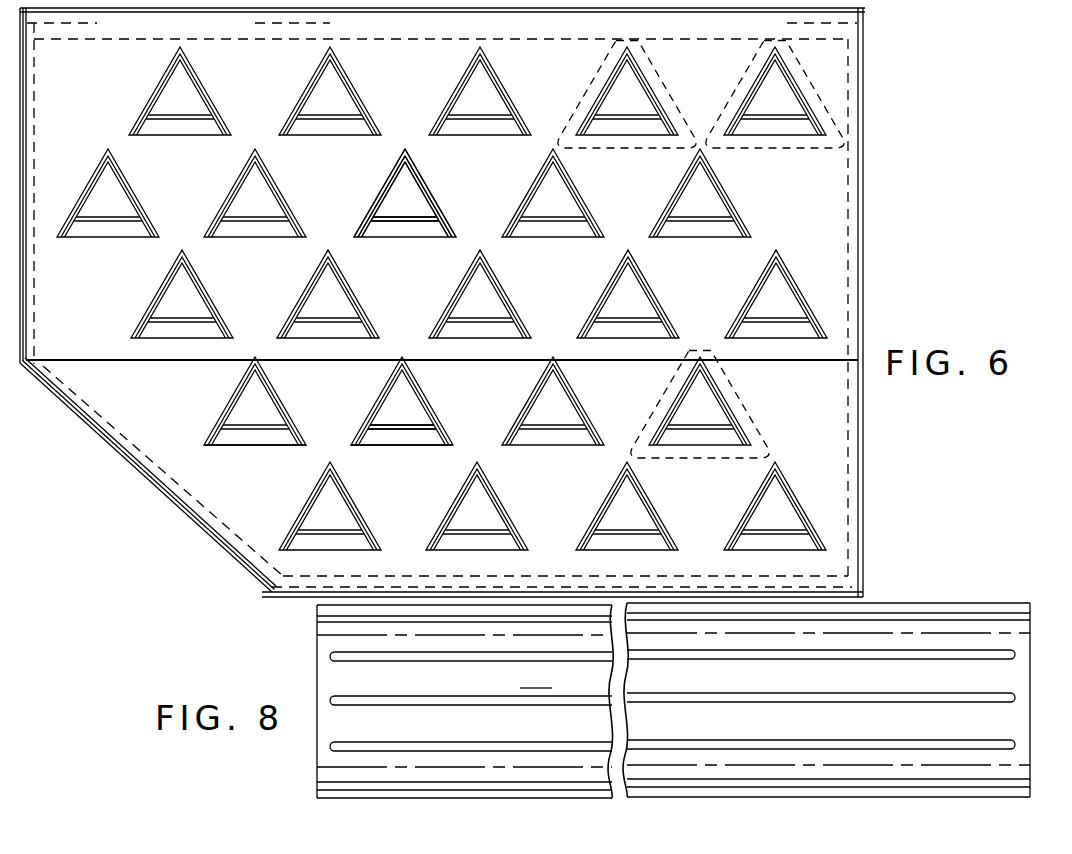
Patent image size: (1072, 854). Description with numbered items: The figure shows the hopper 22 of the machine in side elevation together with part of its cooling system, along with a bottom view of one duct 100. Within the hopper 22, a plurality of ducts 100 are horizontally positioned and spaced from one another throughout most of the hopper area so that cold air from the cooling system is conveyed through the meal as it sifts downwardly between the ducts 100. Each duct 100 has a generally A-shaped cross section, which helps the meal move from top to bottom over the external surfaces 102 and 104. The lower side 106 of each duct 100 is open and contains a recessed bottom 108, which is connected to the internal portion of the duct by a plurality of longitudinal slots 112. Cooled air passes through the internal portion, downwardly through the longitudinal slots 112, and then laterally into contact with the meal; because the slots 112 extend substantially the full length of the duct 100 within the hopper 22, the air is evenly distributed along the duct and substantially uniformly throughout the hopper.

In FIG. 6, the hopper 22 is at (857, 170).
In FIG. 6, the ducts 100 is at (156, 90).
In FIG. 8, the ducts 100 is at (932, 603).
In FIG. 6, the external surface 102 is at (383, 186).
In FIG. 6, the external surface 104 is at (425, 183).
In FIG. 6, the lower side 106 is at (373, 446).
In FIG. 6, the recessed bottom 108 is at (398, 222).
In FIG. 8, the recessed bottom 108 is at (536, 677).
In FIG. 8, the longitudinal slots 112 is at (501, 746).